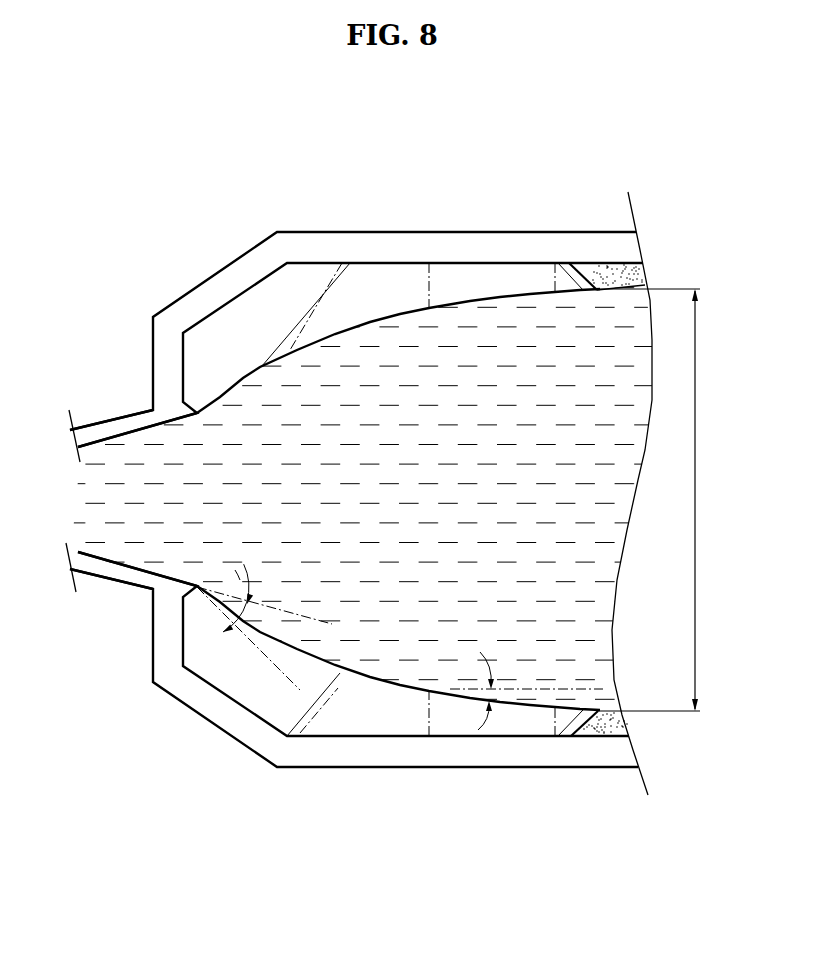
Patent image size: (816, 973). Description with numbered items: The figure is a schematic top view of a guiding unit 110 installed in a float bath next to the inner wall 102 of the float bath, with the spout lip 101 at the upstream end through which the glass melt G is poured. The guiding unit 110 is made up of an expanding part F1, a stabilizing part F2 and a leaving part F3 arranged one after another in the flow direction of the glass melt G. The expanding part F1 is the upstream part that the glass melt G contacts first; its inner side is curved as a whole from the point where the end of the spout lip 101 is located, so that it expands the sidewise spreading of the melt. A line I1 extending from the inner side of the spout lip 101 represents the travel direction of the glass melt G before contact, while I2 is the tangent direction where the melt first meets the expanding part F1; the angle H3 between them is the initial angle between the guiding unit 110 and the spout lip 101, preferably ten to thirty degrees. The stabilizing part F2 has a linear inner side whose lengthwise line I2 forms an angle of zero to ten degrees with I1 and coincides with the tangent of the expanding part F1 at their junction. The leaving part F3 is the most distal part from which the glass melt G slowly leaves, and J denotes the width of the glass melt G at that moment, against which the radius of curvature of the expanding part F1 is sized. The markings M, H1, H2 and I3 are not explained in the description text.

The spout lip 101 is at (114, 428).
The inner wall of the float bath 102 is at (288, 233).
The guiding unit 110 is at (373, 150).
The expanding part F1 is at (386, 282).
The stabilizing part F2 is at (500, 282).
The leaving part F3 is at (559, 263).
The glass melt G is at (625, 484).
The molten metal (tin) region M is at (606, 272).
The width of the glass melt J is at (654, 500).
The first inclination angle H1 is at (328, 622).
The second inclination angle H2 is at (277, 666).
The initial angle H3 is at (221, 634).
The line extending from the inner side of the spout lip I1 is at (541, 687).
The tangent direction at the initial contact point I2 is at (528, 705).
The third exit angle I3 is at (474, 691).